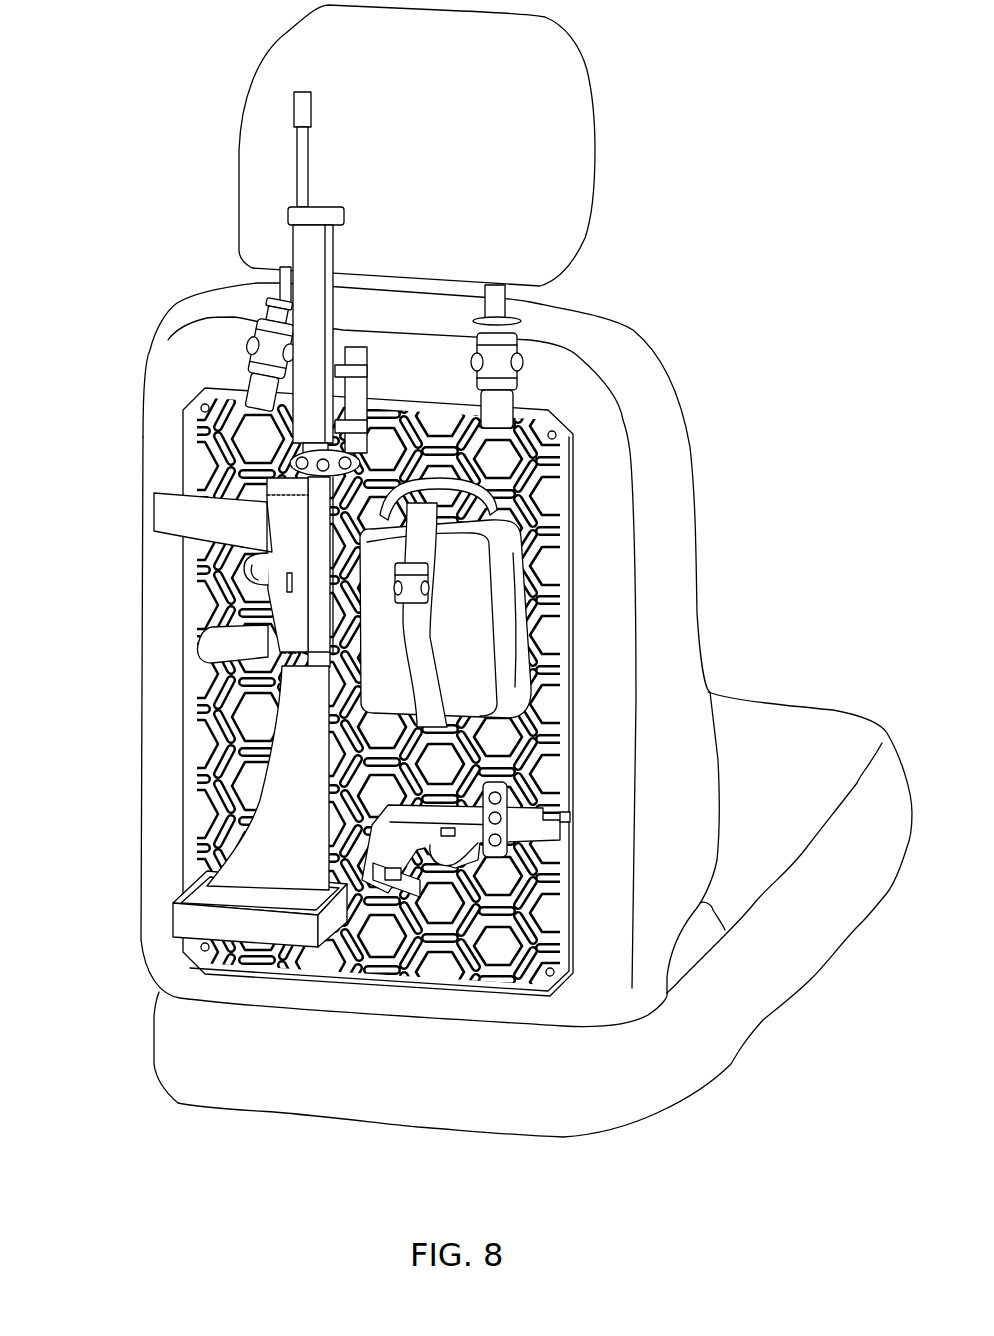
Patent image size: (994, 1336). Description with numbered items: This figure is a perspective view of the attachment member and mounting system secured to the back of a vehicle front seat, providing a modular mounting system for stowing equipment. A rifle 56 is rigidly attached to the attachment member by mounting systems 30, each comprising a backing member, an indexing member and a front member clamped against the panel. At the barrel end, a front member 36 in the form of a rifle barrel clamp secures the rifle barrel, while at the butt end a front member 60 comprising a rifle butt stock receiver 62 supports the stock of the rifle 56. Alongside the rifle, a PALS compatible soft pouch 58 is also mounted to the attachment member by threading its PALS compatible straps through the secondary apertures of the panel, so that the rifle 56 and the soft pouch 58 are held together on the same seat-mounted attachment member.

The adapter 30 is at (170, 500).
The front member 36 is at (290, 457).
The rifle 56 is at (248, 853).
The soft pouch 58 is at (462, 597).
The front member 60 is at (128, 965).
The rifle butt stock receiver 62 is at (226, 922).